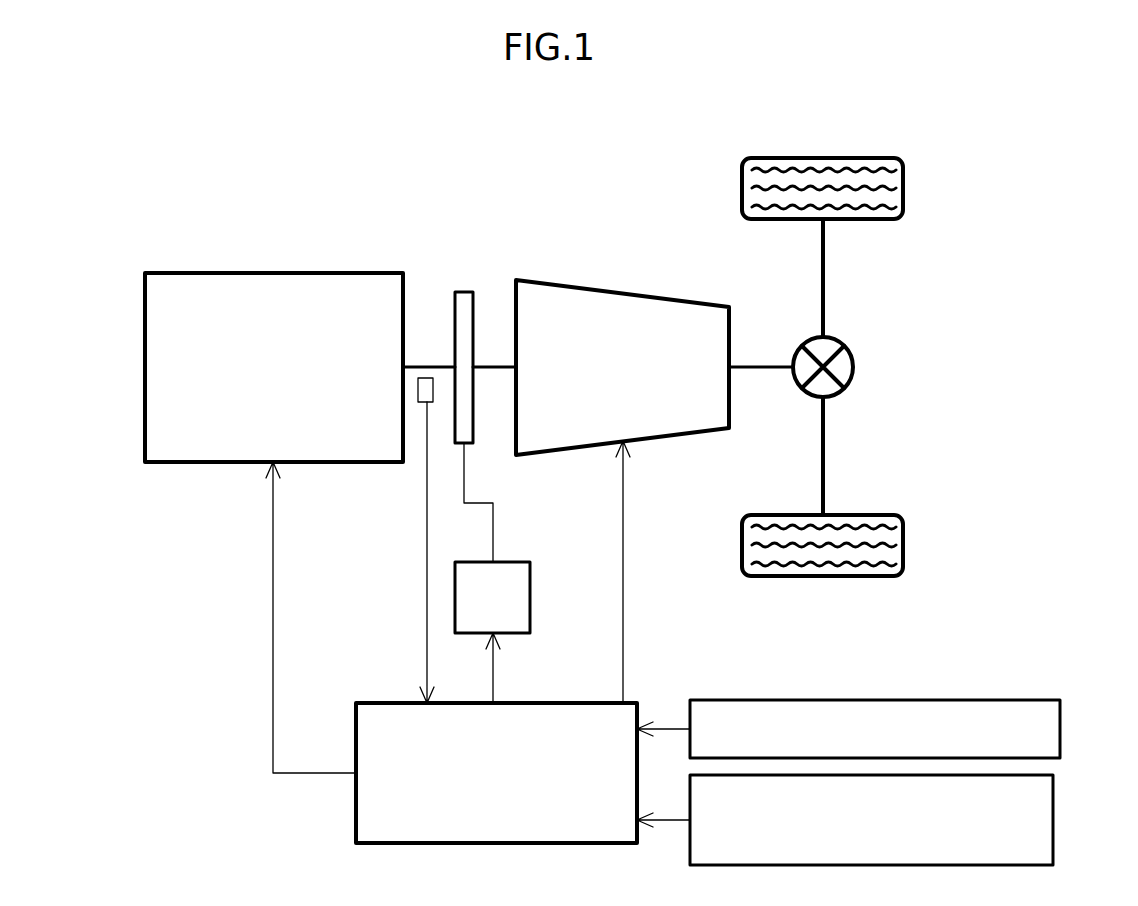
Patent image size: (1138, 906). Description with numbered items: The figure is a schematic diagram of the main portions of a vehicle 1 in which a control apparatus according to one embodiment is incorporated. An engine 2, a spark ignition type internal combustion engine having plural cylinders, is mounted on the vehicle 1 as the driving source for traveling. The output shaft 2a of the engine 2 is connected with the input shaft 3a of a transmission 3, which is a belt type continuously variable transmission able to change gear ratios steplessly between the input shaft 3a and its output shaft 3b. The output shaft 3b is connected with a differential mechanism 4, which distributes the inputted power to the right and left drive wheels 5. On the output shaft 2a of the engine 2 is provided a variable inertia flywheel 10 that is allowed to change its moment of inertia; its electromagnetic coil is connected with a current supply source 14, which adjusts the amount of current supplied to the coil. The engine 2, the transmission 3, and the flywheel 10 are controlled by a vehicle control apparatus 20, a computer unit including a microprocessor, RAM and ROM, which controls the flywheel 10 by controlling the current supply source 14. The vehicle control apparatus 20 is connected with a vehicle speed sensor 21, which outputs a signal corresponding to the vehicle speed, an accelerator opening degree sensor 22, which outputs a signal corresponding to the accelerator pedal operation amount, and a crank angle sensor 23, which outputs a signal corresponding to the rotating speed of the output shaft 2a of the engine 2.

The vehicle 1 is at (102, 228).
The engine 2 is at (212, 273).
The output shaft 2a is at (432, 362).
The transmission 3 is at (621, 293).
The input shaft 3a is at (490, 362).
The output shaft 3b is at (758, 362).
The differential mechanism 4 is at (853, 367).
The drive wheels 5 is at (903, 184).
The variable inertia flywheel 10 is at (466, 292).
The current supply source 14 is at (530, 595).
The vehicle control apparatus 20 is at (355, 825).
The vehicle speed sensor 21 is at (958, 700).
The accelerator opening degree sensor 22 is at (1053, 840).
The crank angle sensor 23 is at (418, 392).